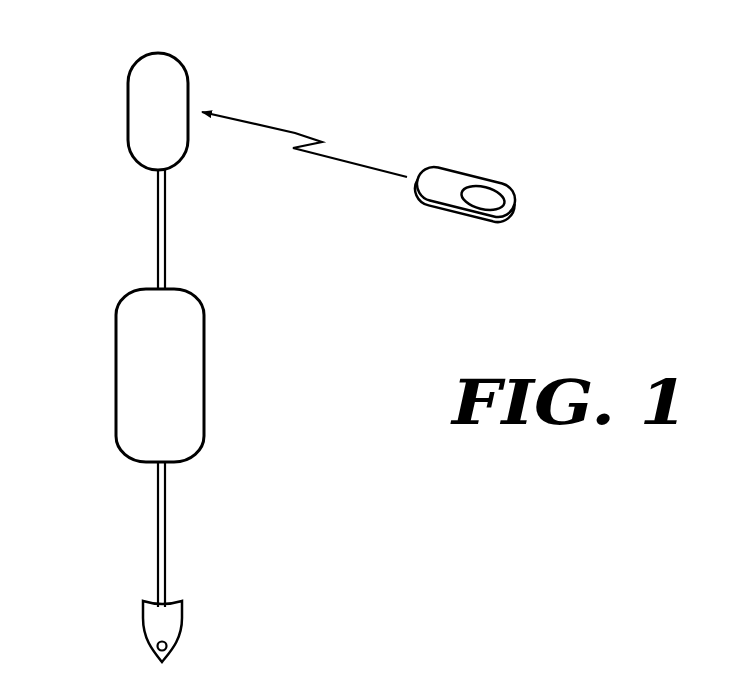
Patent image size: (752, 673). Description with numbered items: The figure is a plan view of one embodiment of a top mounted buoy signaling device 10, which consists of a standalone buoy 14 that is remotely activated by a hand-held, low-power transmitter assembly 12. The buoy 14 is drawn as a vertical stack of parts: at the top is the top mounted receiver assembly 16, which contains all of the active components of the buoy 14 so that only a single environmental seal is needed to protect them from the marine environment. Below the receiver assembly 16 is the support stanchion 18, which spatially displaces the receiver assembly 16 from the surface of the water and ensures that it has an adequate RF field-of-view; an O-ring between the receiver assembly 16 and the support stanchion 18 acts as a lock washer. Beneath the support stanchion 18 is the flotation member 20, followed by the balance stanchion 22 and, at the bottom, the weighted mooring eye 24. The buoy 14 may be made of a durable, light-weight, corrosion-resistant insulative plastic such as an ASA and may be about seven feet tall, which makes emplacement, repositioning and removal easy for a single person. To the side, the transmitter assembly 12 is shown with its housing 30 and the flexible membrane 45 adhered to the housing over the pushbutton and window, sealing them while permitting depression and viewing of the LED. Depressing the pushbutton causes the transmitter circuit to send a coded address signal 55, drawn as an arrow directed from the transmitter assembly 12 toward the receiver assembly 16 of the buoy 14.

The top mounted buoy signaling device 10 is at (366, 475).
The transmitter assembly 12 is at (490, 186).
The buoy 14 is at (199, 357).
The receiver assembly 16 is at (127, 92).
The support stanchion 18 is at (168, 214).
The flotation member 20 is at (207, 375).
The balance stanchion 22 is at (170, 520).
The weighted mooring eye 24 is at (186, 633).
The housing 30 is at (506, 207).
The flexible membrane 45 is at (489, 193).
The coded address signal 55 is at (296, 132).